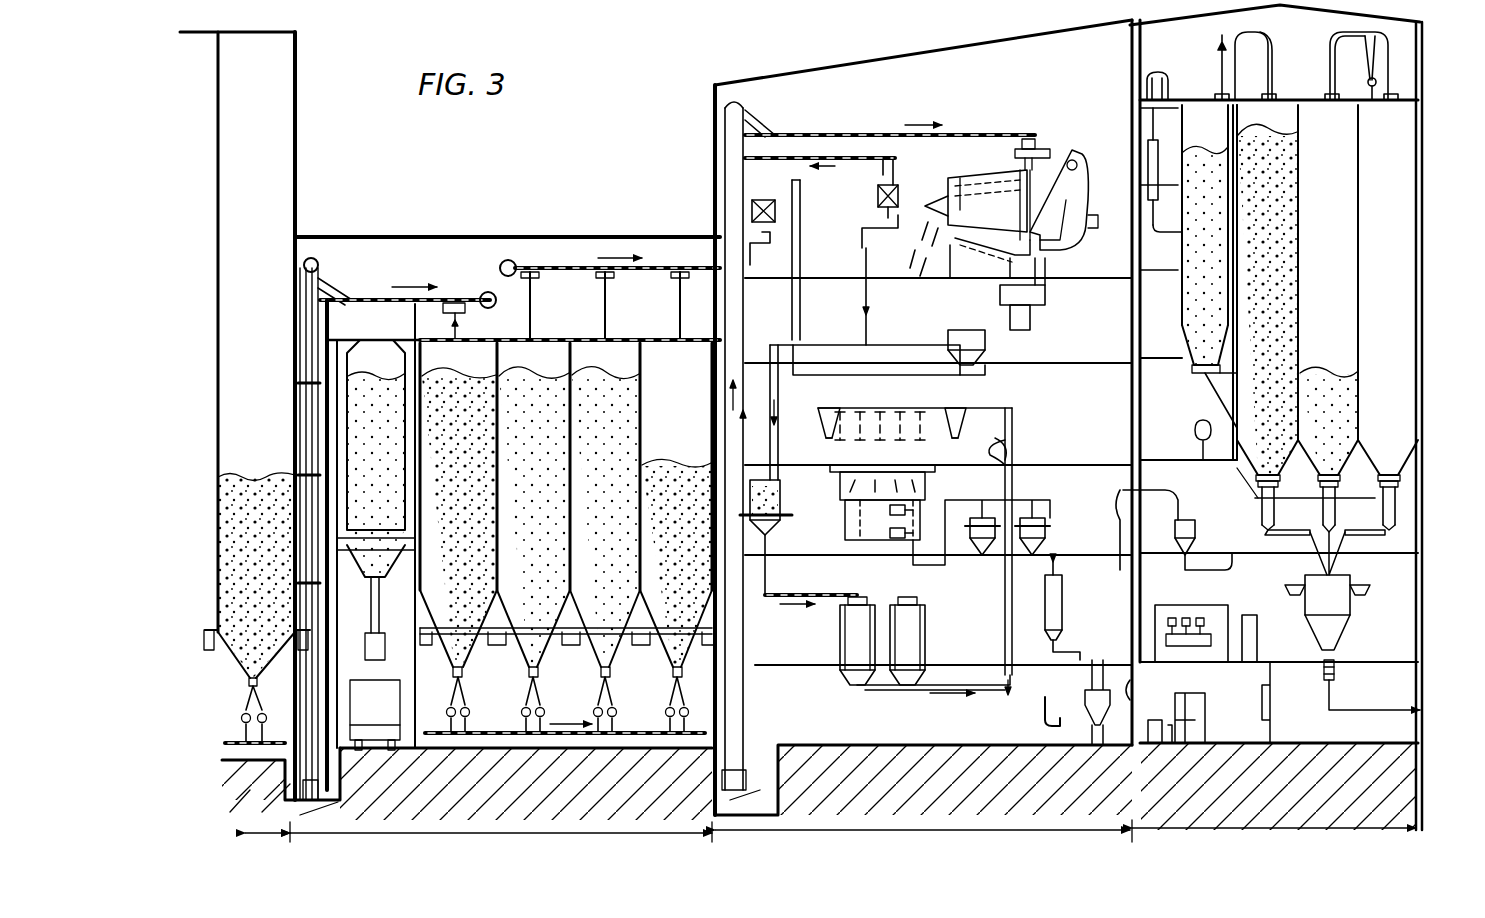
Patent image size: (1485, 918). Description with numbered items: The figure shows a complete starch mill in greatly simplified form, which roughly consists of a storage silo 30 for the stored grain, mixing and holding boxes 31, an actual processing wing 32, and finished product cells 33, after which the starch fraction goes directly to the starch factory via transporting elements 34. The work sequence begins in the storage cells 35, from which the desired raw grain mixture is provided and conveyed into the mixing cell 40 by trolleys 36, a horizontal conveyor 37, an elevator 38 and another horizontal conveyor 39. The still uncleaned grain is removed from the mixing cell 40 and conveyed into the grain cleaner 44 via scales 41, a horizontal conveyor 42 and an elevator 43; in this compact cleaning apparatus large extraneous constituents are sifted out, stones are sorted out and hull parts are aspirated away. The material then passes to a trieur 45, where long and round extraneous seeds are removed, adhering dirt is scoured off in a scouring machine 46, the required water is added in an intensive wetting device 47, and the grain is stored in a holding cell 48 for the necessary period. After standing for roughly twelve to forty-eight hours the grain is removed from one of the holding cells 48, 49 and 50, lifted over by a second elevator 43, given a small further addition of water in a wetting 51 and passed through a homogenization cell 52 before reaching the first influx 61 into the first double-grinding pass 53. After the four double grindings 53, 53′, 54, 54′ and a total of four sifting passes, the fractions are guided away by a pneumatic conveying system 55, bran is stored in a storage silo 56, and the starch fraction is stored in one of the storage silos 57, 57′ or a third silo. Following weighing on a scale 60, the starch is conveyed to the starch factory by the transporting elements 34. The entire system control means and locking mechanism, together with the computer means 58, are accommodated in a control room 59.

The storage silo 30 is at (280, 795).
The mixing and holding boxes 31 is at (505, 539).
The processing wing 32 is at (923, 425).
The finished product cells 33 is at (1276, 423).
The transporting elements 34 is at (1330, 695).
The storage cells 35 is at (245, 416).
The trolleys 36 is at (246, 712).
The horizontal conveyor 37 is at (232, 743).
The elevator 38 is at (322, 280).
The horizontal conveyor 39 is at (380, 300).
The mixing cell 40 is at (405, 545).
The scales 41 is at (462, 712).
The horizontal conveyor 42 is at (572, 736).
The elevator 43 is at (745, 700).
The grain cleaner 44 is at (1058, 162).
The trieur 45 is at (1030, 300).
The scouring machine 46 is at (960, 332).
The intensive wetting device 47 is at (778, 250).
The holding cell 48 is at (482, 522).
The holding cell 49 is at (556, 522).
The holding cell 50 is at (641, 522).
The wetting 51 is at (884, 252).
The homogenization cell 52 is at (780, 508).
The first double-grinding pass 53 is at (842, 660).
The double grinding 53′ is at (880, 625).
The double grinding 54 is at (905, 620).
The double grinding 54′ is at (926, 650).
The pneumatic conveying system 55 is at (1118, 498).
The storage silo 56 is at (1209, 282).
The storage silo 57 is at (1267, 317).
The storage silo 57′ is at (1328, 318).
The computer means 58 is at (1208, 638).
The control room 59 is at (1166, 618).
The scale 60 is at (1327, 612).
The first influx 61 is at (792, 597).